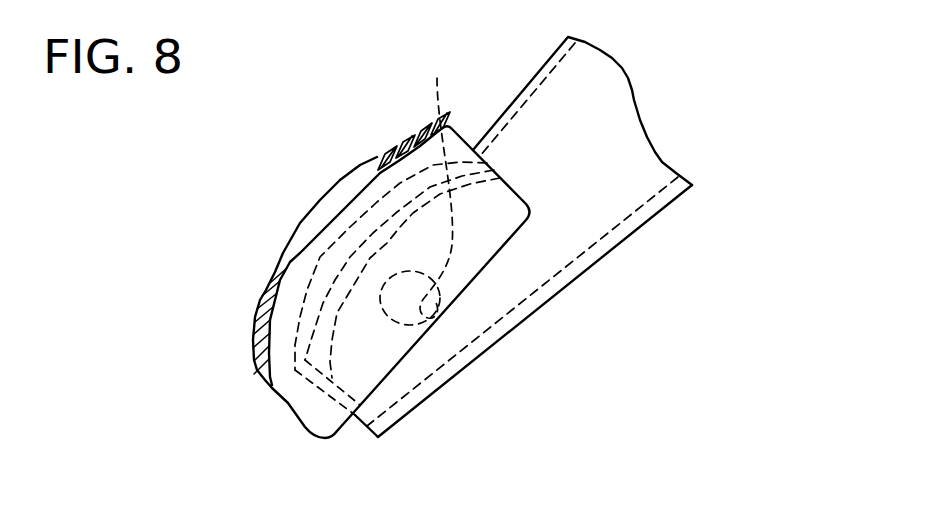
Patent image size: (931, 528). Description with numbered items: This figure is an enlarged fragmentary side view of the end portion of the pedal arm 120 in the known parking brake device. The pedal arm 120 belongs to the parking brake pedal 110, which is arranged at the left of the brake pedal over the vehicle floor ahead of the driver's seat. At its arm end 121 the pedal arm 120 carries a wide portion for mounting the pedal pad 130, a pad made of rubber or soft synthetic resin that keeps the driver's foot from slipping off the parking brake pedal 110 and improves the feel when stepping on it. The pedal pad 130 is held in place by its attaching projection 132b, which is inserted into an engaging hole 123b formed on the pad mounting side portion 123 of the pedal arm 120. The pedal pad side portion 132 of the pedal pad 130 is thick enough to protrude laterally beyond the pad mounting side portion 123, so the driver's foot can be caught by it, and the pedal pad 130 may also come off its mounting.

The parking brake pedal 110 is at (593, 290).
The pedal arm 120 is at (670, 212).
The arm end 121 is at (426, 403).
The pad mounting side portion 123 is at (440, 347).
The engaging hole 123b is at (440, 300).
The pedal pad 130 is at (286, 219).
The pedal pad side portion 132 is at (373, 273).
The attaching projection 132b is at (437, 179).